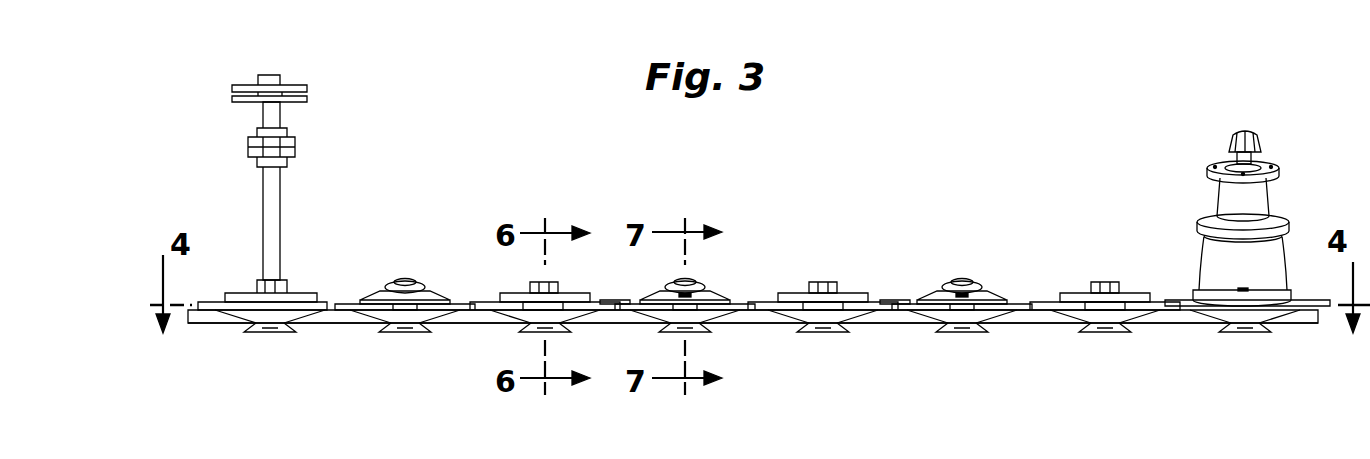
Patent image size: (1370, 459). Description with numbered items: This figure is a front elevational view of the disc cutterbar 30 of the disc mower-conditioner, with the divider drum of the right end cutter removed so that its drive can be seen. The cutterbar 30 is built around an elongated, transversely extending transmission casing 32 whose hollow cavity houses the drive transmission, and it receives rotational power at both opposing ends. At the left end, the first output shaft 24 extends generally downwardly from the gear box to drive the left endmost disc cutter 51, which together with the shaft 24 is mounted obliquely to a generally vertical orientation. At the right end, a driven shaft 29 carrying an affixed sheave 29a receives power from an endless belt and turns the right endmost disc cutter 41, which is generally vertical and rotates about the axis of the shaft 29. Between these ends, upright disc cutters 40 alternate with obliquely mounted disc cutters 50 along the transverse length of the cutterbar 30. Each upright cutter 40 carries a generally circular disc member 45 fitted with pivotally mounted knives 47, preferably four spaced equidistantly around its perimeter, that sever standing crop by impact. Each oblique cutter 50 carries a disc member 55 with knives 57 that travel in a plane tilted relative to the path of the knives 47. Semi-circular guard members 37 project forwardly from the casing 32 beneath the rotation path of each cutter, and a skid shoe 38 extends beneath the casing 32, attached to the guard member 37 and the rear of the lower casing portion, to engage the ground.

The first output shaft 24 is at (1238, 131).
The driven shaft 29 is at (279, 210).
The sheave 29a is at (285, 86).
The disc cutterbar 30 is at (940, 175).
The transmission casing 32 is at (909, 318).
The guard member 37 is at (492, 318).
The skid shoe 38 is at (535, 334).
The upright disc cutter 40 is at (535, 292).
The right endmost disc cutter 41 is at (287, 292).
The disc member 45 is at (567, 294).
The knives 47 is at (478, 312).
The oblique disc cutter 50 is at (420, 292).
The left endmost disc cutter 51 is at (1288, 258).
The disc member 55 is at (707, 290).
The knives 57 is at (603, 300).